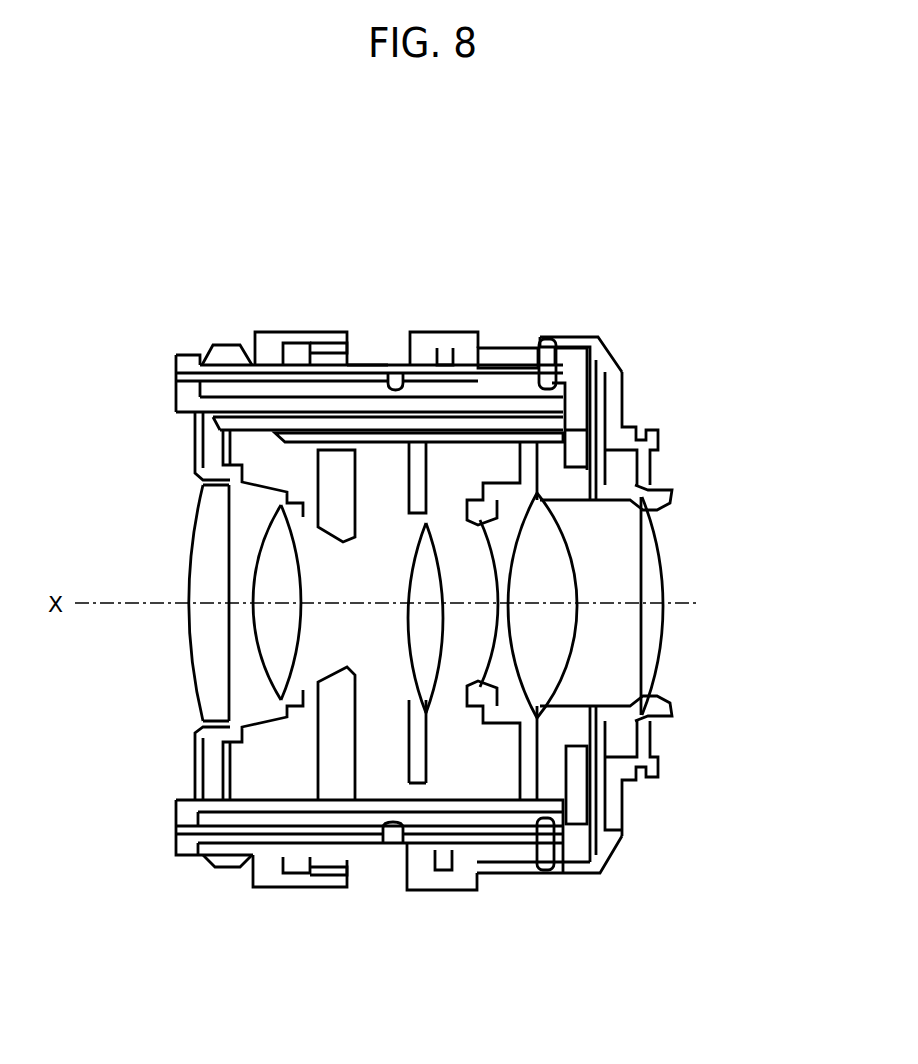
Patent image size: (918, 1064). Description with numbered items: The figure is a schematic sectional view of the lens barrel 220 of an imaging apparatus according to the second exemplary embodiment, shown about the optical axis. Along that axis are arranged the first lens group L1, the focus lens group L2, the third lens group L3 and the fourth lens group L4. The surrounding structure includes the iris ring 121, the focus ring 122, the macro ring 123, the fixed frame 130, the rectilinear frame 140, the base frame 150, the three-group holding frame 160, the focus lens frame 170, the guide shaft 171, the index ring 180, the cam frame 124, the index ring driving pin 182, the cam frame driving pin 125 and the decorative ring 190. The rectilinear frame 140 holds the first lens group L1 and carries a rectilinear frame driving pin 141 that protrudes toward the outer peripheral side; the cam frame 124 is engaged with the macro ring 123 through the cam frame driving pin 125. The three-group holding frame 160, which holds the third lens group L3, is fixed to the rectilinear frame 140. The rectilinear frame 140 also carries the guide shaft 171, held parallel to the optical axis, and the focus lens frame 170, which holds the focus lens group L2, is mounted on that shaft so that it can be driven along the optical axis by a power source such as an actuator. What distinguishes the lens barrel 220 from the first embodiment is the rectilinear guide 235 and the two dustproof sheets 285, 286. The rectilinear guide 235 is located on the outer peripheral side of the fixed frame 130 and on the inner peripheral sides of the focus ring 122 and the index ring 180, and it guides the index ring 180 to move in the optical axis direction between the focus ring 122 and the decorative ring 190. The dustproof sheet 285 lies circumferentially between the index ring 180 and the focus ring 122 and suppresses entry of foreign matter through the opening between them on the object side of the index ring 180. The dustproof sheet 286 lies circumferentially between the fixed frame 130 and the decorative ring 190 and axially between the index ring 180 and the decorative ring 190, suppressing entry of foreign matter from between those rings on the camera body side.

The lens barrel 220 is at (192, 215).
The rectilinear guide 235 is at (292, 368).
The focus ring 122 is at (267, 330).
The dustproof sheet 285 is at (324, 350).
The iris ring 121 is at (225, 360).
The fixed frame 130 is at (187, 370).
The rectilinear frame 140 is at (192, 393).
The index ring 180 is at (367, 362).
The index ring driving pin 182 is at (396, 375).
The dustproof sheet 286 is at (443, 352).
The decorative ring 190 is at (462, 383).
The rectilinear frame driving pin 141 is at (462, 383).
The cam frame 124 is at (530, 365).
The macro ring 123 is at (565, 352).
The cam frame driving pin 125 is at (582, 342).
The base frame 150 is at (605, 352).
The guide shaft 171 is at (430, 477).
The focus lens frame 170 is at (427, 508).
The three-group holding frame 160 is at (525, 777).
The first lens group L1 is at (208, 665).
The focus lens group L2 is at (393, 660).
The third lens group L3 is at (507, 697).
The fourth lens group L4 is at (650, 655).